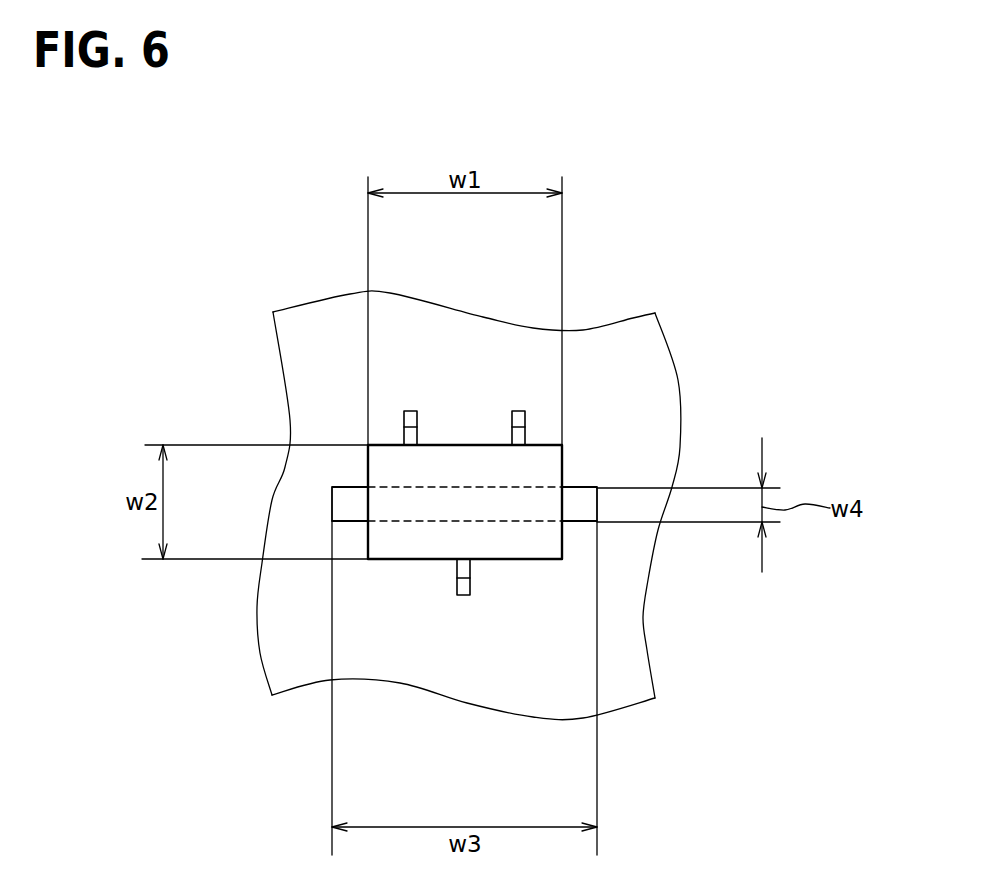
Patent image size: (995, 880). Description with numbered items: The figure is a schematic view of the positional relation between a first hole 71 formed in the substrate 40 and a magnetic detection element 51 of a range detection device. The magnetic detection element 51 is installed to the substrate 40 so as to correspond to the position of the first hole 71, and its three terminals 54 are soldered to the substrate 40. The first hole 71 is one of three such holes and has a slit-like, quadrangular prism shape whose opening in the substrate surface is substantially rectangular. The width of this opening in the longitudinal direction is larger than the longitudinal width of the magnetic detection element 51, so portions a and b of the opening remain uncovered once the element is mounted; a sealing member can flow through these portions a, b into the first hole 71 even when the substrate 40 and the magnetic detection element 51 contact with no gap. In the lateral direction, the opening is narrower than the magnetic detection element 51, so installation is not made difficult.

The substrate 40 is at (297, 672).
The magnetic detection element 51 is at (532, 560).
The terminals 54 is at (410, 410).
The first hole 71 is at (587, 511).
The uncovered portion of the opening portion a is at (345, 503).
The uncovered portion of the opening portion b is at (578, 503).